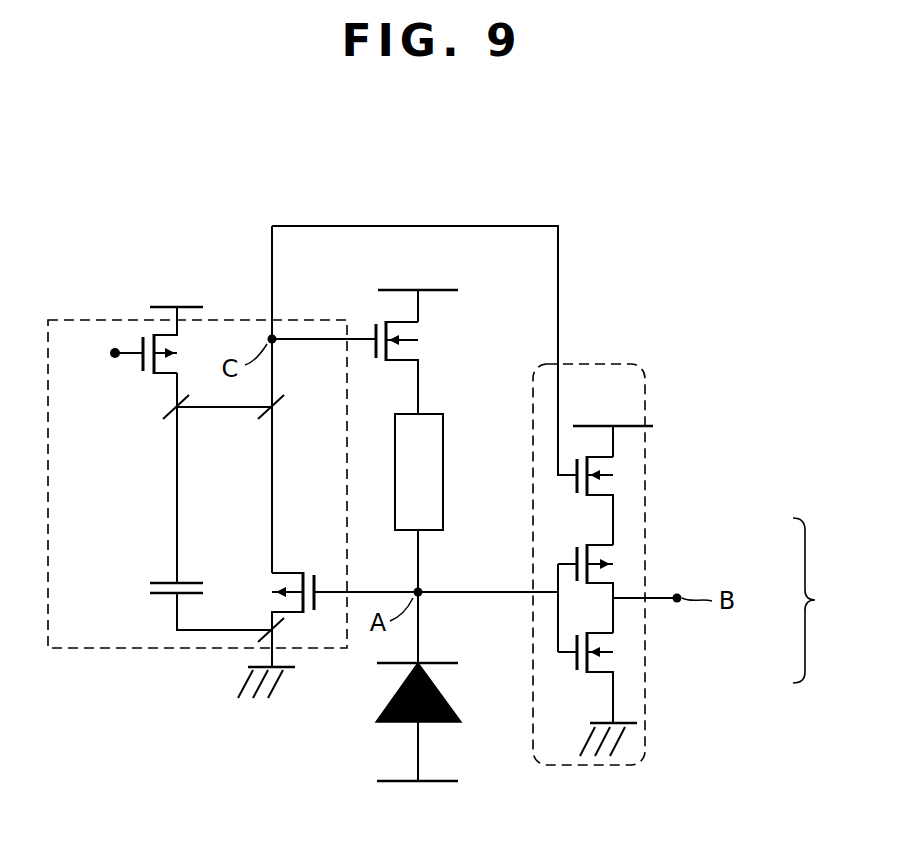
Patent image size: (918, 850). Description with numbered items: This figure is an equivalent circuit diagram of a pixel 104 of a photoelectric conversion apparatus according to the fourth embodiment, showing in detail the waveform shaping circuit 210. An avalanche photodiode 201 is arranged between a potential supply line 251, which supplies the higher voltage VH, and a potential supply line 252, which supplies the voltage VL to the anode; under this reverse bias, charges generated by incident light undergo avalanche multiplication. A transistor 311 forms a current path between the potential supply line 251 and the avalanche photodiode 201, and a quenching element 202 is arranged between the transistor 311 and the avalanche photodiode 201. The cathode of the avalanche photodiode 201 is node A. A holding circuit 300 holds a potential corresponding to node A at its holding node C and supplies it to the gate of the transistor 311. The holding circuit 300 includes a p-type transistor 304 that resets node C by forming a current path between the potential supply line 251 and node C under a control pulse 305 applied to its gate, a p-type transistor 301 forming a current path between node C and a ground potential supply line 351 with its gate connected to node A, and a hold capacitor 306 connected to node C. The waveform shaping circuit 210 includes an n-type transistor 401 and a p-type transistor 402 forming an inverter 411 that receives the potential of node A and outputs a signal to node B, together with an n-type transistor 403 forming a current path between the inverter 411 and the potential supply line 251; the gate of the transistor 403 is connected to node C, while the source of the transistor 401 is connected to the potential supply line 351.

The pixel 104 is at (383, 198).
The holding circuit 300 is at (237, 318).
The control pulse 305 is at (110, 353).
The transistor 304 is at (138, 345).
The potential supply line 251 is at (156, 306).
The transistor 311 is at (373, 333).
The quenching element 202 is at (443, 446).
The transistor 301 is at (290, 572).
The hold capacitor 306 is at (158, 580).
The potential supply line 351 is at (250, 661).
The transistor 403 is at (575, 485).
The transistor 402 is at (608, 553).
The transistor 401 is at (608, 661).
The waveform shaping circuit 210 is at (648, 490).
The inverter 411 is at (828, 600).
The avalanche photodiode 201 is at (394, 692).
The potential supply line 252 is at (445, 781).